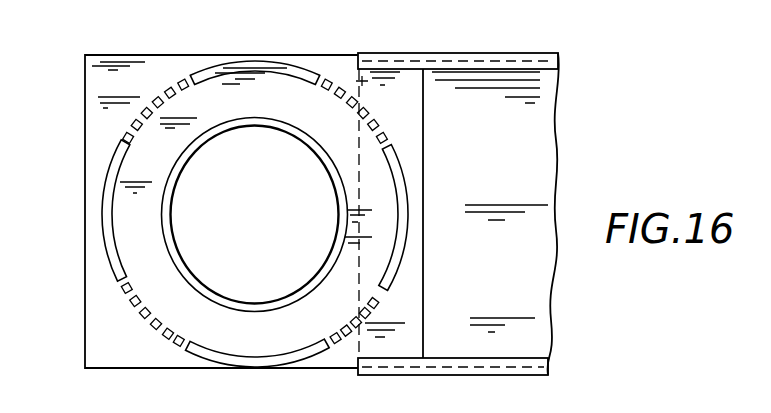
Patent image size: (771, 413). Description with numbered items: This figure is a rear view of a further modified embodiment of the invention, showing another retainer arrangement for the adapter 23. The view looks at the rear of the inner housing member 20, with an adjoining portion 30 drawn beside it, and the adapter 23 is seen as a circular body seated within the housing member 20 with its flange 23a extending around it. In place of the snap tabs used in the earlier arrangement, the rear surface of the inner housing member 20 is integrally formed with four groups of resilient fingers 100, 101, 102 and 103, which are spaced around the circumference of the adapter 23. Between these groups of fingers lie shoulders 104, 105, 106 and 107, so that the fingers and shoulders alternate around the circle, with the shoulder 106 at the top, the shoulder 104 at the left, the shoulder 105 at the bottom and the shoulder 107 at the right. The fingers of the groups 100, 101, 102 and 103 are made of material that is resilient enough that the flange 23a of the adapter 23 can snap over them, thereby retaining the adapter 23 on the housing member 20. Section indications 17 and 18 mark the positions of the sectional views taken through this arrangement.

The inner housing member 20 is at (146, 48).
The adjacent housing section 30 is at (488, 50).
The inner shaft / section line 17 is at (108, 348).
The section line 18 is at (56, 228).
The adapter 23 is at (220, 84).
The flange 23a is at (255, 82).
The group of resilient fingers 100 is at (127, 128).
The group of resilient fingers 101 is at (352, 98).
The group of resilient fingers 102 is at (178, 347).
The group of resilient fingers 103 is at (358, 328).
The shoulder 104 is at (80, 210).
The shoulder 105 is at (278, 364).
The shoulder 106 is at (287, 63).
The shoulder 107 is at (408, 202).